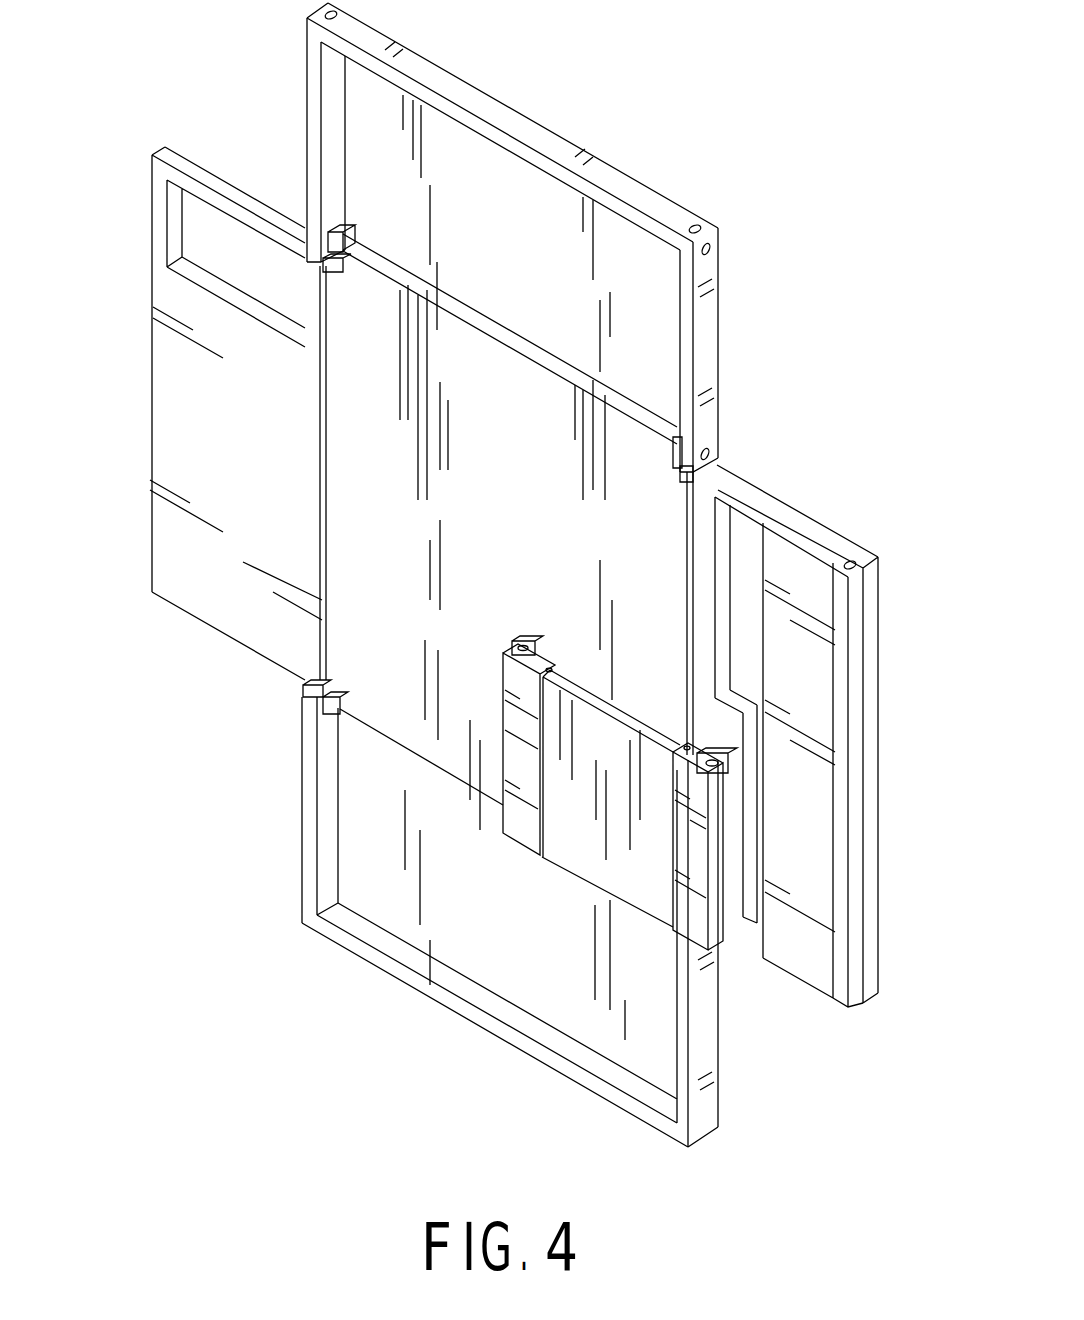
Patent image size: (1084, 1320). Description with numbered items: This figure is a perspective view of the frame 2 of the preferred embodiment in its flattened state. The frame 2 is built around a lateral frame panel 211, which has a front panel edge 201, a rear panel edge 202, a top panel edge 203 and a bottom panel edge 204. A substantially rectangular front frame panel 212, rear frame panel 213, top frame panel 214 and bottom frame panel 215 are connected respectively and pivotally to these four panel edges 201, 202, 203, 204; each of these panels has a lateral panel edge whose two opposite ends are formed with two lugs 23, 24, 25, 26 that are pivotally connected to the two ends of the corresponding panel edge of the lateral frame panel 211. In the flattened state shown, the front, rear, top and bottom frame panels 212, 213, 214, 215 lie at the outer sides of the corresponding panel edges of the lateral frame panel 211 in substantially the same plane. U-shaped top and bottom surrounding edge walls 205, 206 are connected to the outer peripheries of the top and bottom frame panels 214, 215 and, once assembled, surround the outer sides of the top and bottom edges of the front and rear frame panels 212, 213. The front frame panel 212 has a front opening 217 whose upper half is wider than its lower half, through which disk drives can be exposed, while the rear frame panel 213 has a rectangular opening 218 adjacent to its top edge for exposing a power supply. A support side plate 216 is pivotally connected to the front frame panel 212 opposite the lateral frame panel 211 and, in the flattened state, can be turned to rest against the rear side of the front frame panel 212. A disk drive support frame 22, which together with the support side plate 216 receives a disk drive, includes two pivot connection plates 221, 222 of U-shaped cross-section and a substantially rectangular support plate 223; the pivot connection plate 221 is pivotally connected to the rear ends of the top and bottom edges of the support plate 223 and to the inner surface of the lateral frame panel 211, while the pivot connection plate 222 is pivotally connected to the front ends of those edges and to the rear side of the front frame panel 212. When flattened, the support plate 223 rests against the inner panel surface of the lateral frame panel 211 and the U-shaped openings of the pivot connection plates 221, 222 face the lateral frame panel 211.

The frame 2 is at (842, 312).
The disk drive support frame 22 is at (641, 783).
The lug 23 is at (679, 461).
The lug 24 is at (330, 273).
The lug 25 is at (340, 232).
The lug 26 is at (331, 712).
The front panel edge 201 is at (690, 607).
The rear panel edge 202 is at (324, 438).
The top panel edge 203 is at (467, 320).
The bottom panel edge 204 is at (369, 735).
The top surrounding edge wall 205 is at (473, 98).
The bottom surrounding edge wall 206 is at (390, 965).
The lateral frame panel 211 is at (411, 496).
The front frame panel 212 is at (834, 707).
The rear frame panel 213 is at (183, 413).
The top frame panel 214 is at (512, 237).
The bottom frame panel 215 is at (510, 895).
The support side plate 216 is at (820, 777).
The front opening 217 is at (748, 598).
The rectangular opening 218 is at (215, 249).
The pivot connection plate 221 is at (503, 657).
The pivot connection plate 222 is at (690, 852).
The support plate 223 is at (614, 858).